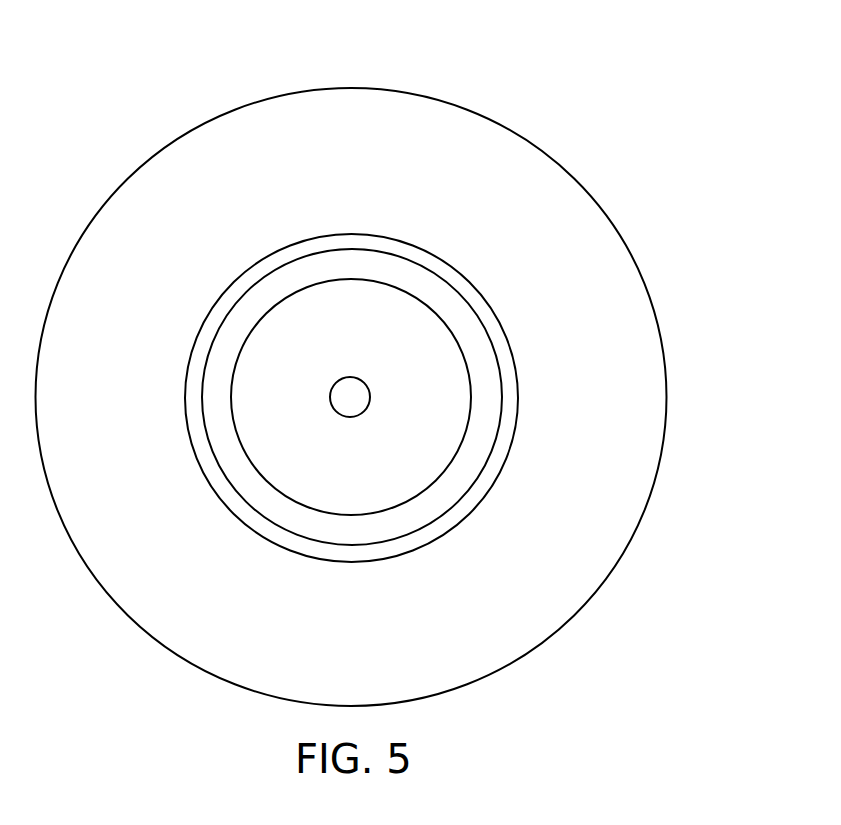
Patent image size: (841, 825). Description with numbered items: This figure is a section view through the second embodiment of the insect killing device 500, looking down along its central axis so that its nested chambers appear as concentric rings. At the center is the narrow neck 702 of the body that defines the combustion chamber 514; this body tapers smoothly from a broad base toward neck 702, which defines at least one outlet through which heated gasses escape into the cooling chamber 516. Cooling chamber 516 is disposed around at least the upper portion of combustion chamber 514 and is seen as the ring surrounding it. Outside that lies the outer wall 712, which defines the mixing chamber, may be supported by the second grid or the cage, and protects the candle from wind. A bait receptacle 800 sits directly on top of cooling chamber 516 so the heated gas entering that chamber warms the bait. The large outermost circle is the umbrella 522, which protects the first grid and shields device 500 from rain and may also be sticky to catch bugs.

The insect killing device 500 is at (645, 118).
The combustion chamber 514 is at (349, 398).
The cooling chamber 516 is at (370, 497).
The umbrella 522 is at (667, 393).
The narrow neck 702 is at (350, 417).
The outer wall 712 is at (519, 398).
The bait receptacle 800 is at (462, 480).